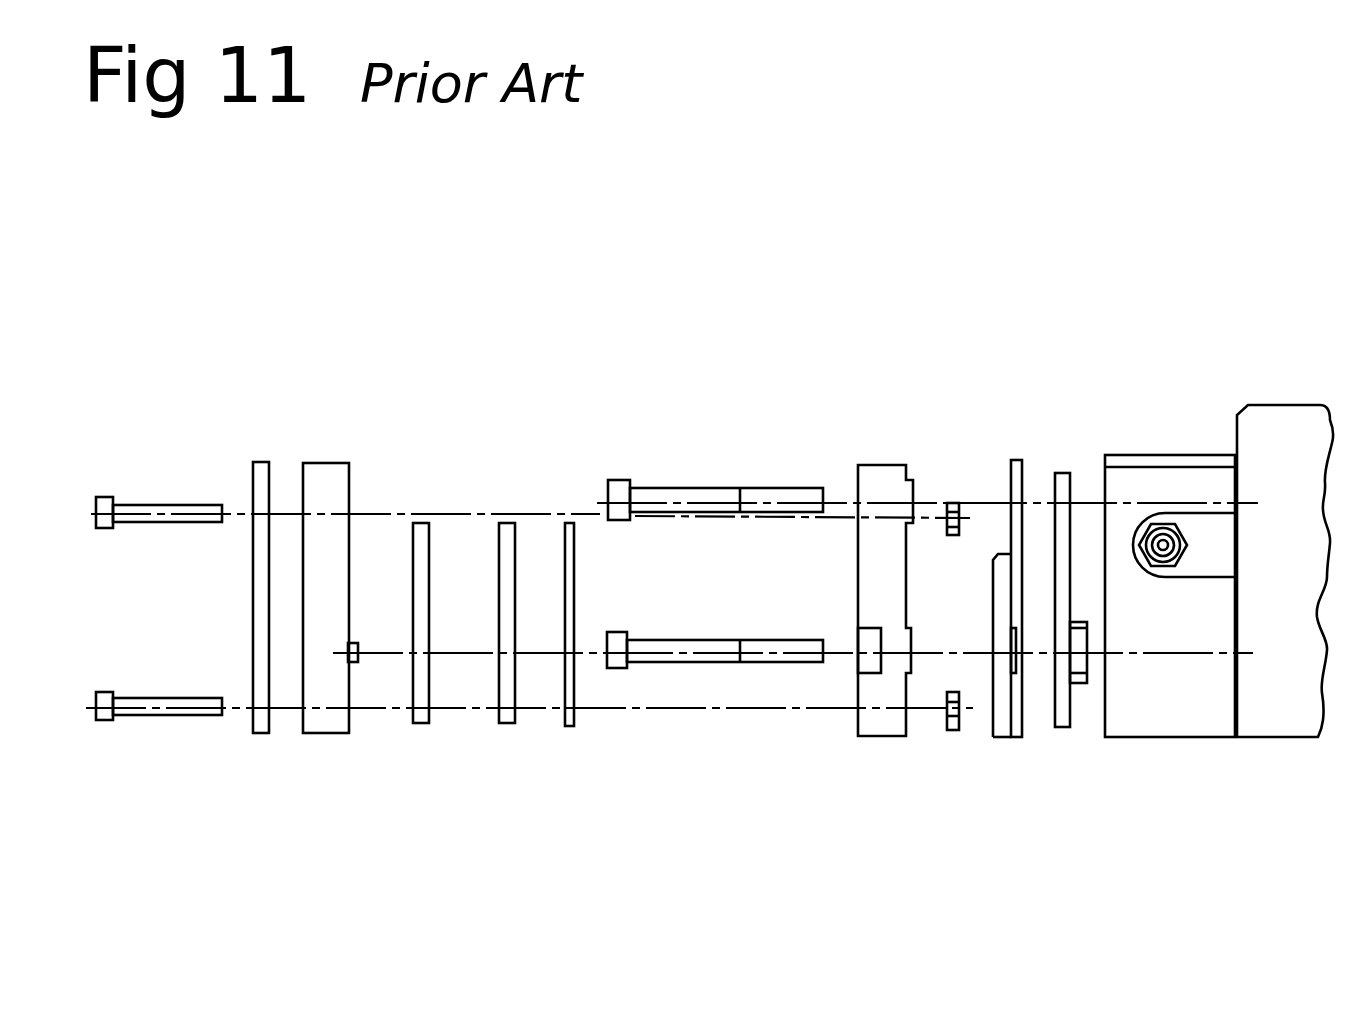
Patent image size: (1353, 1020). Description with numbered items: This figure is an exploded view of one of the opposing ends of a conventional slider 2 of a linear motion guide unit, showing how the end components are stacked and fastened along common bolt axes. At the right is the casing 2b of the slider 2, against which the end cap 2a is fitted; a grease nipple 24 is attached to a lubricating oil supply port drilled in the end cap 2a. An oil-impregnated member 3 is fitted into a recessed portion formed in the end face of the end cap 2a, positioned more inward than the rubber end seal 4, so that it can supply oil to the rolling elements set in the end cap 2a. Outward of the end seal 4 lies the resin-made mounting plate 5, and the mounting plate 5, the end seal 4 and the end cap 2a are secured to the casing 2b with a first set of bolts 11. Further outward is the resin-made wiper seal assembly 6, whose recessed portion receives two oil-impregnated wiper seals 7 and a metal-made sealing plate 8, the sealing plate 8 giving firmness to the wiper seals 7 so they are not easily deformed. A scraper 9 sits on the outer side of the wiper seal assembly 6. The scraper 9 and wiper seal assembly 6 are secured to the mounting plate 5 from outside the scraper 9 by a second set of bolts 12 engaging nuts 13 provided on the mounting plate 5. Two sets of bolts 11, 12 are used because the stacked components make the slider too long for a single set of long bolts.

The slider 2 is at (1219, 559).
The end cap 2a is at (1142, 737).
The casing 2b is at (1268, 737).
The grease nipple 24 is at (1165, 527).
The oil-impregnated member 3 is at (1060, 727).
The end seal 4 is at (1015, 458).
The mounting plate 5 is at (888, 473).
The nut 13 is at (957, 505).
The bolt 11 is at (725, 488).
The sealing plate 8 is at (570, 726).
The wiper seal 7 is at (418, 527).
The wiper seal assembly 6 is at (327, 473).
The scraper 9 is at (262, 725).
The bolt 12 is at (160, 503).